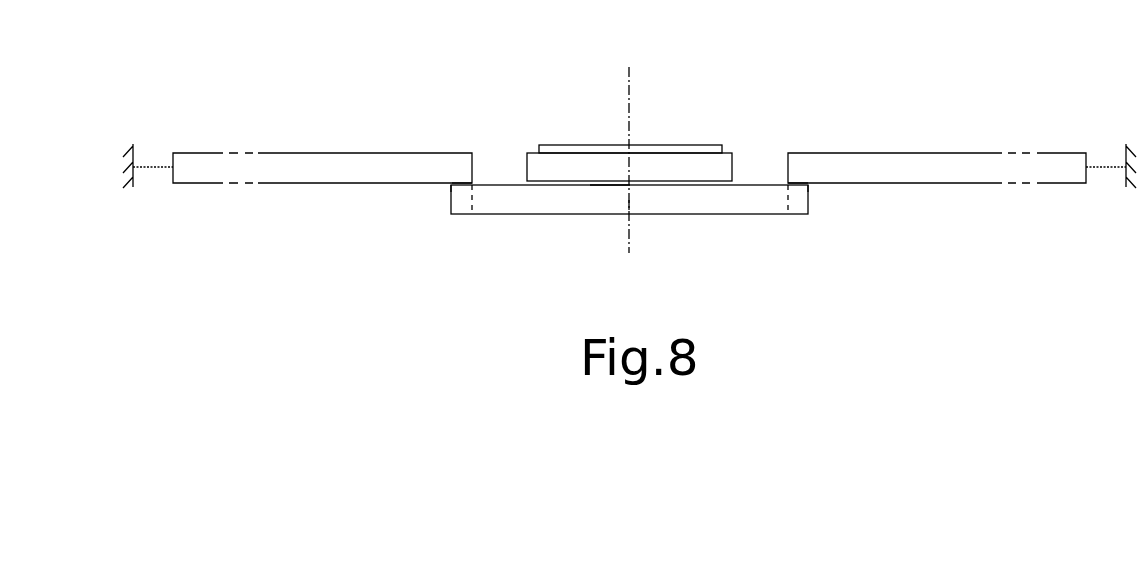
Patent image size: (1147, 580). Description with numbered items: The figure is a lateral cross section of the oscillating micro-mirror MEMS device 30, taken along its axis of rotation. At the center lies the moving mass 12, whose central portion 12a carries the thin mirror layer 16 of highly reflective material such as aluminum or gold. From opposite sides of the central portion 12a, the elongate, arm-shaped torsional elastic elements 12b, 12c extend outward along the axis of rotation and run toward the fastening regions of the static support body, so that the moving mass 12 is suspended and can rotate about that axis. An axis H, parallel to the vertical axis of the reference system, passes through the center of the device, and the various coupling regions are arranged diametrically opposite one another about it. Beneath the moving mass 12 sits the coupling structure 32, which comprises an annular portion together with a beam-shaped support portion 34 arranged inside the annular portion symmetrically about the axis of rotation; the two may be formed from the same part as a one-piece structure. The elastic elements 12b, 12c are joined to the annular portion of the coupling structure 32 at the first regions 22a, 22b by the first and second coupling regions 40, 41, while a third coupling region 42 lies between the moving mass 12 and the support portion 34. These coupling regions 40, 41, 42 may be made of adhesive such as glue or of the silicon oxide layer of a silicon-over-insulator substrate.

The MEMS device 30 is at (275, 73).
The moving mass 12 is at (629, 127).
The central portion 12a is at (678, 176).
The elastic element 12b is at (393, 178).
The elastic element 12c is at (898, 178).
The mirror layer 16 is at (640, 150).
The first region 22a is at (463, 182).
The first region 22b is at (794, 182).
The coupling structure 32 is at (563, 218).
The support portion 34 is at (637, 203).
The first coupling region 40 is at (452, 185).
The second coupling region 41 is at (808, 185).
The third coupling region 42 is at (607, 186).
The axis H is at (627, 93).